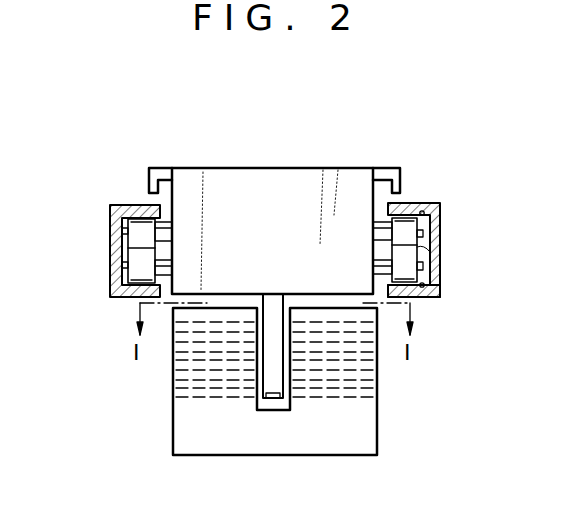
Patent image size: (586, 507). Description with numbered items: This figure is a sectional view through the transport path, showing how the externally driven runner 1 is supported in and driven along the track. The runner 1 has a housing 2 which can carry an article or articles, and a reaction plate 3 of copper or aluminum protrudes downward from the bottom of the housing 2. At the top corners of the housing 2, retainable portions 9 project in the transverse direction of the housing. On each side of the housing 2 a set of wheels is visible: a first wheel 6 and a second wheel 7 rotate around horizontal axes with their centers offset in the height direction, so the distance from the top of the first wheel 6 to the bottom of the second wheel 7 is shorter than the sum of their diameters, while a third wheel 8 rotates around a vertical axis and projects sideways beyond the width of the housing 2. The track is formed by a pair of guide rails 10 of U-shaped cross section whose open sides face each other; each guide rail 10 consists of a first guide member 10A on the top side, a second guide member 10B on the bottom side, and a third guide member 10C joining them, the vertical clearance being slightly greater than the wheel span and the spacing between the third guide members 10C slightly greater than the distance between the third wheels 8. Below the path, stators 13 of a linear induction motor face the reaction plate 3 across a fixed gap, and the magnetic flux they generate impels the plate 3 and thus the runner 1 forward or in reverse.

The runner 1 is at (344, 162).
The housing 2 is at (272, 184).
The reaction plate 3 is at (272, 392).
The first wheel 6 is at (403, 220).
The second wheel 7 is at (440, 292).
The third wheel 8 is at (128, 220).
The retainable portion 9 is at (159, 174).
The guide rail 10 is at (113, 252).
The first guide member 10A is at (424, 213).
The second guide member 10B is at (422, 287).
The third guide member 10C is at (423, 250).
The stator 13 is at (367, 427).